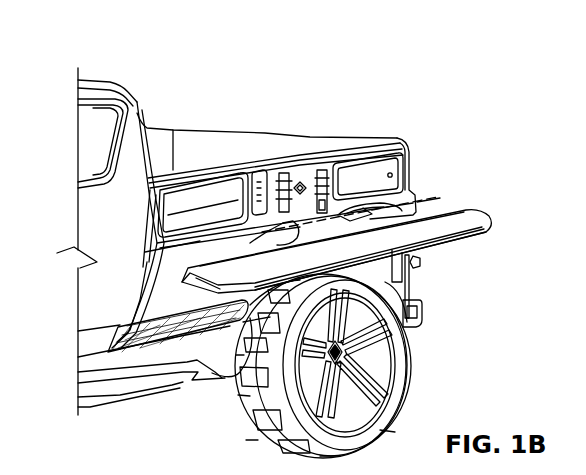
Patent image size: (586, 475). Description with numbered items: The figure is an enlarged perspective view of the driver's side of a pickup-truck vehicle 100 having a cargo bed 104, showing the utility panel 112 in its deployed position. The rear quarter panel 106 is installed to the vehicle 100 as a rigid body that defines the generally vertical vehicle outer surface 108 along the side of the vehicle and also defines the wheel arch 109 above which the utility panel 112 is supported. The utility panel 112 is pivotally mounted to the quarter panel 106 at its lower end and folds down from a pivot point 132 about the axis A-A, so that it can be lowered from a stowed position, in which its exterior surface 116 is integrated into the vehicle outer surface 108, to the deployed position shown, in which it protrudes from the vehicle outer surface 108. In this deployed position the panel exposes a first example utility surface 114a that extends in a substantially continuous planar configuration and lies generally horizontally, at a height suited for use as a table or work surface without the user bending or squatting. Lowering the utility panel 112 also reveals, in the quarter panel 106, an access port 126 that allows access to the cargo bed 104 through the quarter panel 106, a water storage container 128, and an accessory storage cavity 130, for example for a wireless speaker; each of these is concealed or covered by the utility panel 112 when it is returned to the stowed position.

The vehicle 100 is at (123, 52).
The cargo bed 104 is at (345, 75).
The rear quarter panel 106 is at (172, 305).
The vehicle outer surface 108 is at (207, 246).
The wheel arch 109 is at (369, 213).
The utility panel 112 is at (487, 238).
The first example utility surface 114a is at (470, 223).
The exterior surface 116 is at (430, 255).
The access port 126 is at (187, 215).
The water storage container 128 is at (364, 172).
The accessory storage cavity 130 is at (290, 180).
The pivot point 132 is at (324, 198).